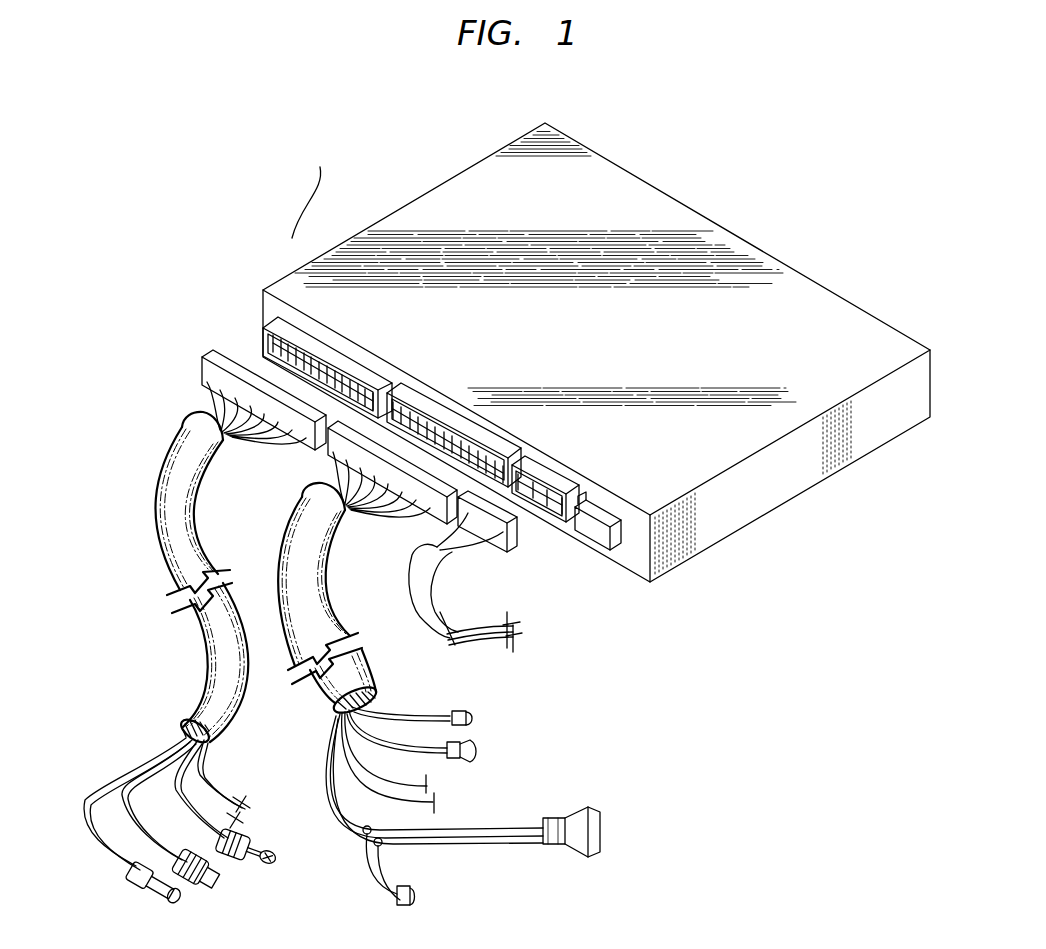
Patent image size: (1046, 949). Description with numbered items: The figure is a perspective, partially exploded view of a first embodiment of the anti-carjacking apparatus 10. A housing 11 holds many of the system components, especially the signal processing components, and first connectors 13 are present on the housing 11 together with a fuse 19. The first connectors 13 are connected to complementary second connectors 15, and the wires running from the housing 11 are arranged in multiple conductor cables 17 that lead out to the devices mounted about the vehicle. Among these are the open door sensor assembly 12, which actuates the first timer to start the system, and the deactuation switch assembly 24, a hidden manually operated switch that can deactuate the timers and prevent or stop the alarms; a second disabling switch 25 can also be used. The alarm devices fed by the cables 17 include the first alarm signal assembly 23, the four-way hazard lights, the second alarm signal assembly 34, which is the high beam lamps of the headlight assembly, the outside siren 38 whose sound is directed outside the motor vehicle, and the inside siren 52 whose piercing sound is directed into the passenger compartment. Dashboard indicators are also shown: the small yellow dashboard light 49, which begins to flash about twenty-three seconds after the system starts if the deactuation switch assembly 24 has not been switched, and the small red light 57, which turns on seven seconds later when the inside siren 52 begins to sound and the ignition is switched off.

The anti-carjacking apparatus 10 is at (285, 135).
The housing 11 is at (810, 298).
The open door sensor assembly 12 is at (160, 893).
The first connectors 13 is at (320, 349).
The second connectors 15 is at (203, 357).
The multiple conductor cables 17 is at (173, 543).
The fuse 19 is at (587, 498).
The first alarm signal assembly 23 is at (448, 786).
The deactuation switch assembly 24 is at (228, 889).
The second disabling switch 25 is at (243, 828).
The second alarm signal assembly 34 is at (450, 803).
The outside siren 38 is at (600, 827).
The small yellow dashboard light 49 is at (413, 890).
The inside siren 52 is at (477, 743).
The small red light 57 is at (467, 713).